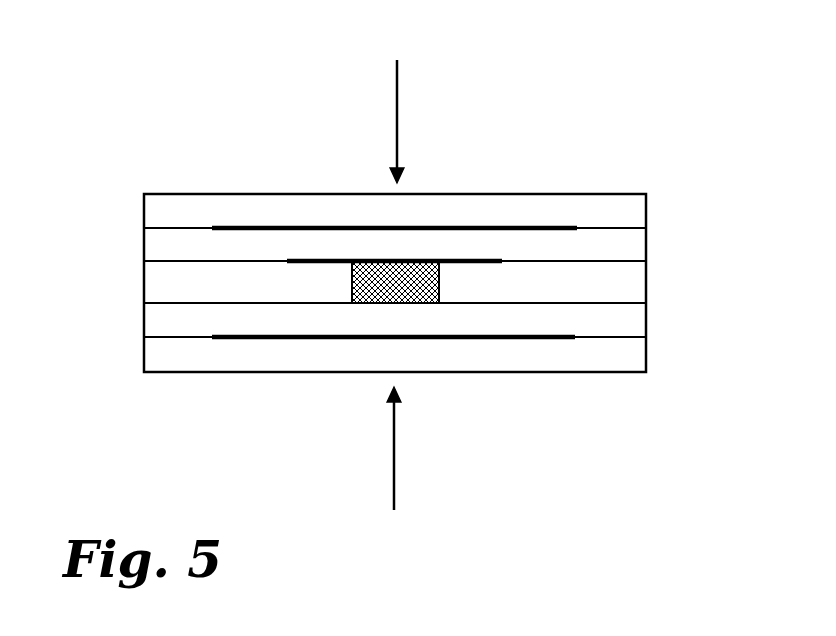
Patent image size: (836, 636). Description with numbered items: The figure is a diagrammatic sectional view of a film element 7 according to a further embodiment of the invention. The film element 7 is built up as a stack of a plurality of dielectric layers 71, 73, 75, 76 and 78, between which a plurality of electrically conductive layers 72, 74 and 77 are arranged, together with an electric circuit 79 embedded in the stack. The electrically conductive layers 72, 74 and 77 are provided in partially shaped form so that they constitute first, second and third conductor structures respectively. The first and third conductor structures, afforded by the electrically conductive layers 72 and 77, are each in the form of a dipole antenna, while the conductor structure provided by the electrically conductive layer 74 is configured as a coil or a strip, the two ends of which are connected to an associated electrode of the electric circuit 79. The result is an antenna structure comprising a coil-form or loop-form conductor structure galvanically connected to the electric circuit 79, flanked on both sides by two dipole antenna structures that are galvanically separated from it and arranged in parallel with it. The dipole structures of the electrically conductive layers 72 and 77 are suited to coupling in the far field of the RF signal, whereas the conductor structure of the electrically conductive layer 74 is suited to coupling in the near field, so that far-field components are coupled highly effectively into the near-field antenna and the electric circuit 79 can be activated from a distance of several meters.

The film element 7 is at (530, 78).
The dielectric layer 71 is at (435, 205).
The electrically conductive layer 72 is at (577, 228).
The dielectric layer 73 is at (160, 245).
The electrically conductive layer 74 is at (502, 261).
The dielectric layer 75 is at (623, 290).
The dielectric layer 76 is at (158, 314).
The electrically conductive layer 77 is at (575, 337).
The dielectric layer 78 is at (318, 355).
The electric circuit 79 is at (402, 288).